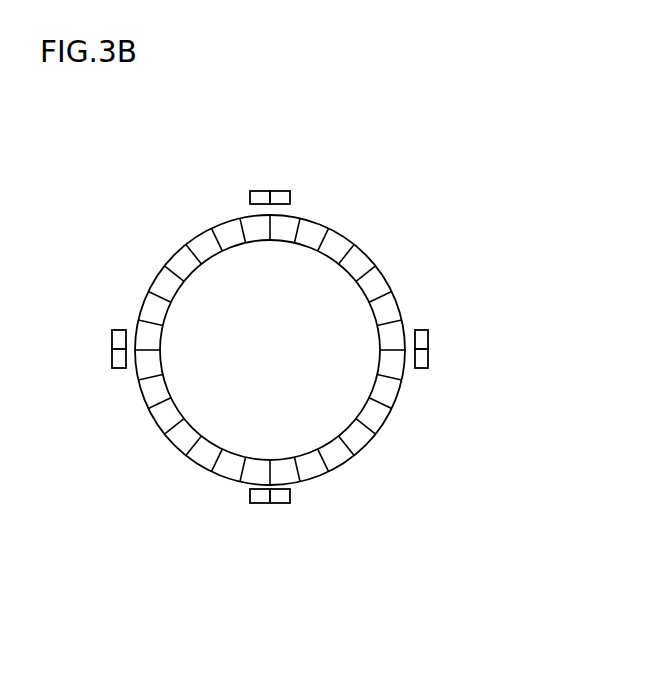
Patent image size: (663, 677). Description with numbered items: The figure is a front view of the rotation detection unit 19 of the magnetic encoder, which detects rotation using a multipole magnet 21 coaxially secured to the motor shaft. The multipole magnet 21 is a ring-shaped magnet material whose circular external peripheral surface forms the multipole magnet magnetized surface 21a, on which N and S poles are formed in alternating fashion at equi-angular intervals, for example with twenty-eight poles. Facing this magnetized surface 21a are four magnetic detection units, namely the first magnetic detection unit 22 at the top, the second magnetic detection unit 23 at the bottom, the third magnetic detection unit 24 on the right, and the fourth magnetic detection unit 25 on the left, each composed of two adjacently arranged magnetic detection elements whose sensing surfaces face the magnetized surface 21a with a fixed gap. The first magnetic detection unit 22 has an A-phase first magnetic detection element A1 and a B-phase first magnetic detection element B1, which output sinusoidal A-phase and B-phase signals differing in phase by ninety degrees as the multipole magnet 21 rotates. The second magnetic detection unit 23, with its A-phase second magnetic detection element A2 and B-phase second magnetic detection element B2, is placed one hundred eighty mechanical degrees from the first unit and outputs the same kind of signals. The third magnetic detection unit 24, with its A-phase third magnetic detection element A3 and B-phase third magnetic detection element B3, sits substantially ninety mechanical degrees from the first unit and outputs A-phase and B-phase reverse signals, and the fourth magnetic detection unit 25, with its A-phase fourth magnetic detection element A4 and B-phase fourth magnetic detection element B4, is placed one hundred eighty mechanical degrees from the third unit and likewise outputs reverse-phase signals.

The rotation detection unit 19 is at (182, 192).
The multipole magnet 21 is at (142, 266).
The multipole magnet magnetized surface 21a is at (372, 252).
The first magnetic detection unit 22 is at (228, 138).
The second magnetic detection unit 23 is at (228, 560).
The third magnetic detection unit 24 is at (484, 332).
The fourth magnetic detection unit 25 is at (52, 332).
The A-phase first magnetic detection element A1 is at (262, 191).
The B-phase first magnetic detection element B1 is at (279, 191).
The A-phase second magnetic detection element A2 is at (281, 503).
The B-phase second magnetic detection element B2 is at (258, 503).
The A-phase third magnetic detection element A3 is at (428, 340).
The B-phase third magnetic detection element B3 is at (428, 360).
The A-phase fourth magnetic detection element A4 is at (112, 357).
The B-phase fourth magnetic detection element B4 is at (112, 340).